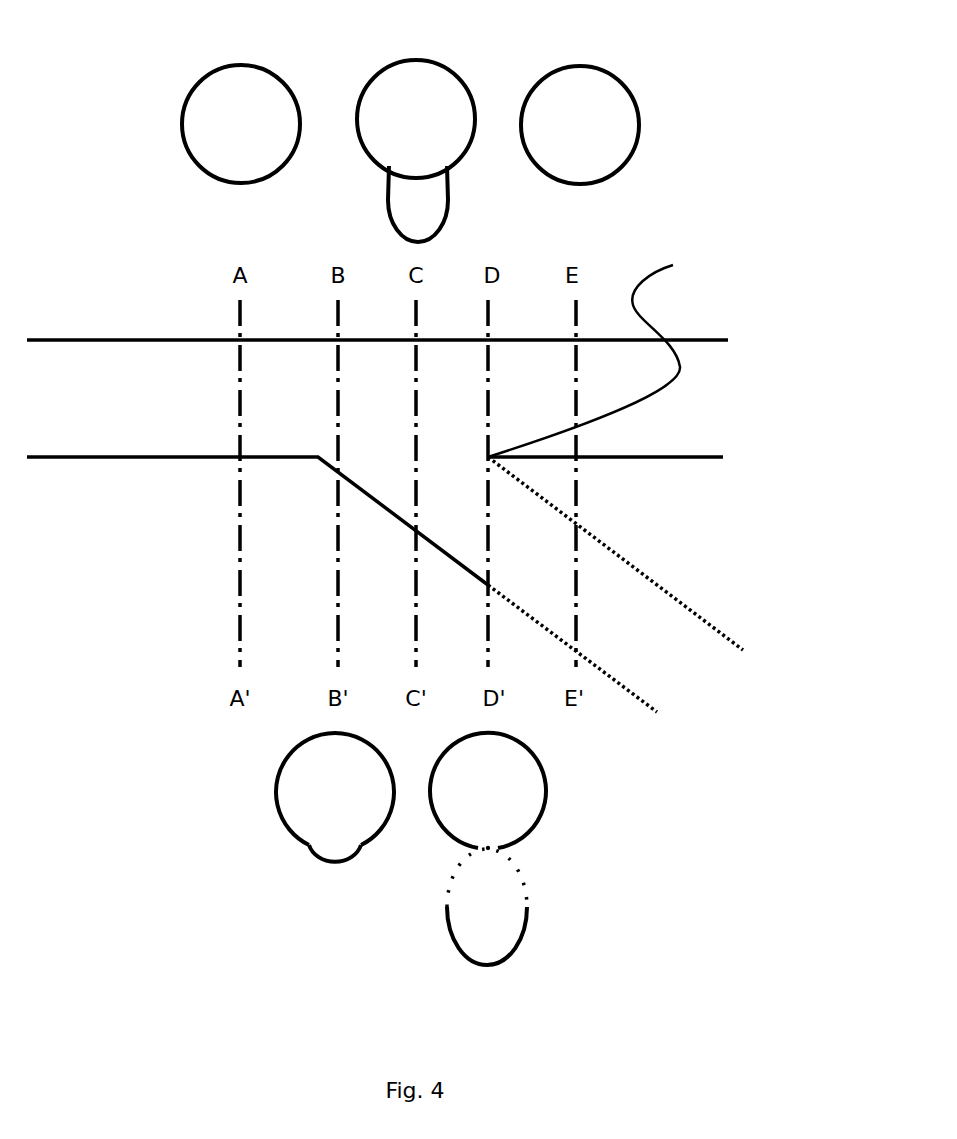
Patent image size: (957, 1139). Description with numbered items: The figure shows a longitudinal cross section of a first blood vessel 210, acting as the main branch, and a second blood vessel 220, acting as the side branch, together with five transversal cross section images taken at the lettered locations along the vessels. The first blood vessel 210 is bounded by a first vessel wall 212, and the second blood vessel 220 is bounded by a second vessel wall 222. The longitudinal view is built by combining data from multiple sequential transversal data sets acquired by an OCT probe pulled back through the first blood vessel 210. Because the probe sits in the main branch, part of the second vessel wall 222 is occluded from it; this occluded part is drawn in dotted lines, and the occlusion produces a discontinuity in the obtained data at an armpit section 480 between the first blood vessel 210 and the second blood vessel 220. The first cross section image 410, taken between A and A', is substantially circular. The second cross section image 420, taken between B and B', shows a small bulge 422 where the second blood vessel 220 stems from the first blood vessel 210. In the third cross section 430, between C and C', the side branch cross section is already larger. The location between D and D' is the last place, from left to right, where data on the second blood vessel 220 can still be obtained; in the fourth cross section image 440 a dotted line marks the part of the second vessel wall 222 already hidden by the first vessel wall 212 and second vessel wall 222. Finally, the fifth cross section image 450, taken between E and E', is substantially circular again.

The first blood vessel 210 is at (133, 505).
The first vessel wall 212 is at (147, 337).
The second blood vessel 220 is at (703, 678).
The second vessel wall 222 is at (696, 607).
The first cross section image 410 is at (241, 65).
The second cross section image 420 is at (277, 812).
The small bulge 422 is at (332, 869).
The third cross section 430 is at (419, 61).
The fourth cross section image 440 is at (488, 967).
The fifth cross section image 450 is at (578, 66).
The armpit section 480 is at (603, 349).